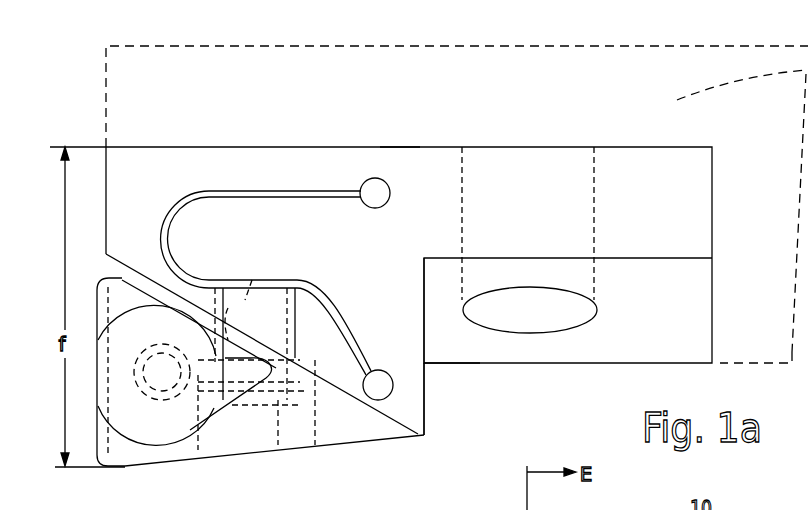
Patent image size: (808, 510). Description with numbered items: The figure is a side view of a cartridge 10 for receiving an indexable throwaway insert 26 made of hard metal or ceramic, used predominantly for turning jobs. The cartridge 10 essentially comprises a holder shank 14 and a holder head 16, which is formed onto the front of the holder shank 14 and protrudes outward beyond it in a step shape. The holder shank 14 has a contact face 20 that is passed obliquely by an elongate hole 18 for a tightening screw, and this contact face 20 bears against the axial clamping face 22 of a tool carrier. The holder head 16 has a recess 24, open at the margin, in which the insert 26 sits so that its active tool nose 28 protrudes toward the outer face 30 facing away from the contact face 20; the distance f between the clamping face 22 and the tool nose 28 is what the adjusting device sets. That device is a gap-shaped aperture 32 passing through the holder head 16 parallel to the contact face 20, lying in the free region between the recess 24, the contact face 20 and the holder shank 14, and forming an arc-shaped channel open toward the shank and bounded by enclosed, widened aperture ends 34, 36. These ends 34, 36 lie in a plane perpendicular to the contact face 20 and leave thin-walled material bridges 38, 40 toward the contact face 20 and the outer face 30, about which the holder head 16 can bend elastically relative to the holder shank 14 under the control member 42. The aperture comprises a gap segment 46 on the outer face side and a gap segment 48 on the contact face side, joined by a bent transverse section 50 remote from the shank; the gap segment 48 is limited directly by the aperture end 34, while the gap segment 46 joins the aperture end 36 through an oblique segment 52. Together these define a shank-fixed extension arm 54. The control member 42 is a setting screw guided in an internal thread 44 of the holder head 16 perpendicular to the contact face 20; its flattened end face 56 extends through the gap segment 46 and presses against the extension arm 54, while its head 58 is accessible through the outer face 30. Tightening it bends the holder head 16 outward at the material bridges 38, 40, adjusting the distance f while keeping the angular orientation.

The cartridge 10 is at (409, 291).
The holder shank 14 is at (580, 504).
The holder head 16 is at (440, 504).
The elongate hole 18 is at (572, 312).
The contact face 20 is at (652, 146).
The clamping face 22 is at (124, 148).
The recess 24 is at (152, 285).
The indexable throwaway insert 26 is at (127, 300).
The tool nose 28 is at (125, 466).
The outer face 30 is at (352, 442).
The gap-shaped aperture 32 is at (338, 294).
The aperture end 34 is at (381, 178).
The aperture end 36 is at (393, 388).
The material bridge 38 is at (400, 167).
The material bridge 40 is at (463, 372).
The control member 42 is at (278, 333).
The internal thread 44 is at (228, 308).
The gap segment 46 is at (278, 280).
The gap segment 48 is at (315, 200).
The transverse section 50 is at (171, 227).
The oblique segment 52 is at (357, 340).
The extension arm 54 is at (268, 215).
The end face 56 is at (252, 280).
The head 58 is at (280, 445).